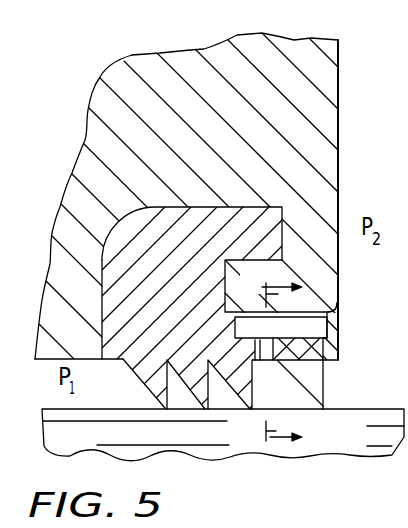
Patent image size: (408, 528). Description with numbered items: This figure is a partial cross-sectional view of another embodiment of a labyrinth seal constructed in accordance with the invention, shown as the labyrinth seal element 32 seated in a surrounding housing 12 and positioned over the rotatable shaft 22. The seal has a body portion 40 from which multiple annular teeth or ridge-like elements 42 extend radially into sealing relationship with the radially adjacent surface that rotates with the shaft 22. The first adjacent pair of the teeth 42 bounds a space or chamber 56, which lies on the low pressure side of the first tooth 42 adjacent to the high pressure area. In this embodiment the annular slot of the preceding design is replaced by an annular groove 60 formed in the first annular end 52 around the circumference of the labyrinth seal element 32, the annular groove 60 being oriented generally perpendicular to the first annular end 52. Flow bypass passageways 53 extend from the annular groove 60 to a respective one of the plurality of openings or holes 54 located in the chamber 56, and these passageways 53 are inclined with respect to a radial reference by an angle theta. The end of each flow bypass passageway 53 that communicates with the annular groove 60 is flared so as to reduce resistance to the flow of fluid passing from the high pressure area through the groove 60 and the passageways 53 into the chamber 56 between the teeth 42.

The housing body 12 is at (211, 137).
The rotatable shaft 22 is at (362, 439).
The labyrinth seal element 32 is at (98, 276).
The body portion 40 is at (179, 269).
The annular teeth or ridge-like elements 42 is at (212, 411).
The first annular end 52 is at (337, 342).
The flow bypass passageways 53 is at (265, 338).
The openings or holes 54 is at (250, 372).
The space or chamber 56 is at (288, 402).
The annular groove 60 is at (339, 317).